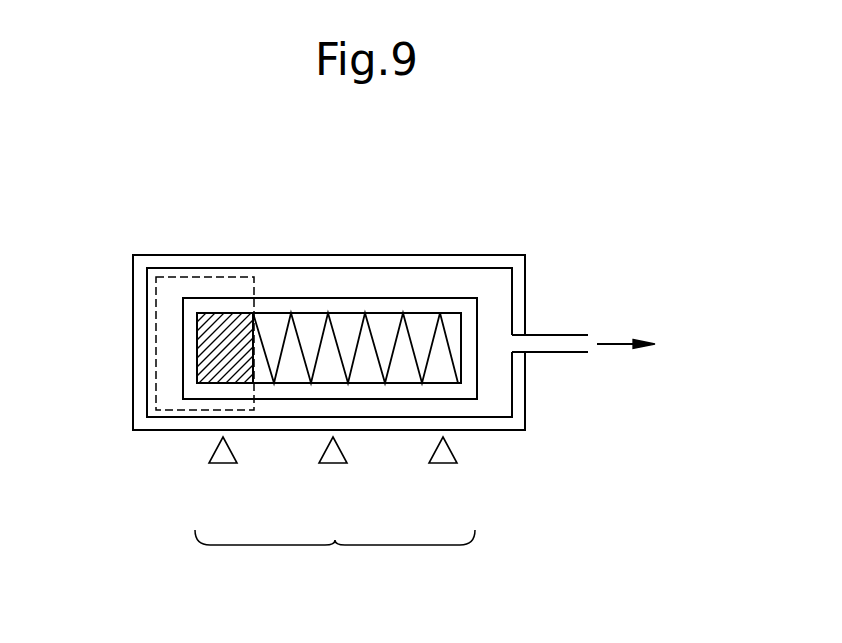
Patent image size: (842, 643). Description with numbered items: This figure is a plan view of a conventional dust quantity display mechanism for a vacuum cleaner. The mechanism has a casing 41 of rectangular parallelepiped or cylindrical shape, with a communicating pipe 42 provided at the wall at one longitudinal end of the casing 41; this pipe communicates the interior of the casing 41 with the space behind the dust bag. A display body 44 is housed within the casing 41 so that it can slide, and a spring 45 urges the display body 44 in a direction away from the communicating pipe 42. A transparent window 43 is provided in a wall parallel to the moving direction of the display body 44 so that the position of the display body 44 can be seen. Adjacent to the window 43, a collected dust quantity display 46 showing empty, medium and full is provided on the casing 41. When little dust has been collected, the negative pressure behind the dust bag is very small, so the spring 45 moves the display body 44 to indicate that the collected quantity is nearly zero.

The casing 41 is at (133, 340).
The communicating pipe 42 is at (565, 335).
The transparent window 43 is at (387, 298).
The display body 44 is at (225, 335).
The spring 45 is at (308, 328).
The collected dust quantity display 46 is at (327, 510).